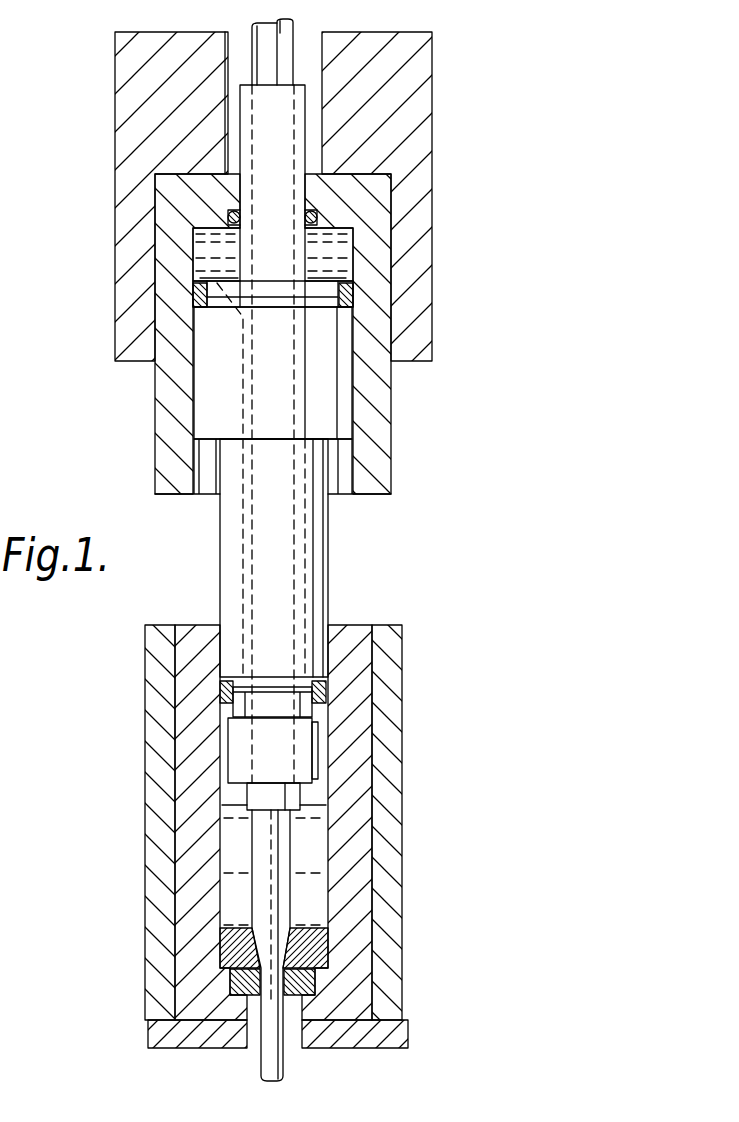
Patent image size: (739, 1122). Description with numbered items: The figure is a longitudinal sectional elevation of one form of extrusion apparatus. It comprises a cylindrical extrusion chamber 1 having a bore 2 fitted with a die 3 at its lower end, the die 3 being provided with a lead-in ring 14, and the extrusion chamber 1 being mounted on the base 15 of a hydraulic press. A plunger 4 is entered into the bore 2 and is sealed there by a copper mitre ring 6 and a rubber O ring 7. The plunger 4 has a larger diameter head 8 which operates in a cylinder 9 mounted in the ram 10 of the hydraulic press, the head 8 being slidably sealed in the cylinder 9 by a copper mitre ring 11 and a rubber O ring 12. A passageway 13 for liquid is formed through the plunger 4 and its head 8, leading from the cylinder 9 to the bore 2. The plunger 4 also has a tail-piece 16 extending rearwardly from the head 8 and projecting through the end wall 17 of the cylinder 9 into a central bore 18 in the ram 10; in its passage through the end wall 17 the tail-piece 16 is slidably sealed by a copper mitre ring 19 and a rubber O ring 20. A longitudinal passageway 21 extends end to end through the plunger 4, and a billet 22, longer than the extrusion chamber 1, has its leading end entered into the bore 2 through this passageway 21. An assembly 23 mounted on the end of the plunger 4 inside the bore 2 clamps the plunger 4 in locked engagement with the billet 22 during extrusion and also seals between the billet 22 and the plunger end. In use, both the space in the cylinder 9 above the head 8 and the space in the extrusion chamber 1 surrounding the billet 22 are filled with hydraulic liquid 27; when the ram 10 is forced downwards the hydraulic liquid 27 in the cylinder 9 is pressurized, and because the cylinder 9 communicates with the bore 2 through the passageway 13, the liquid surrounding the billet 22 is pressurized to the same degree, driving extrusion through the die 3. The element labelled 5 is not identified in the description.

The extrusion chamber 1 is at (344, 774).
The bore 2 is at (328, 825).
The die 3 is at (315, 985).
The plunger 4 is at (300, 580).
The inner bore of plunger 5 is at (305, 645).
The copper mitre ring 6 is at (320, 690).
The rubber O ring 7 is at (318, 703).
The head 8 is at (325, 380).
The cylinder 9 is at (370, 455).
The ram 10 is at (413, 140).
The copper mitre ring 11 is at (350, 307).
The rubber O ring 12 is at (348, 290).
The passageway 13 is at (245, 497).
The lead-in ring 14 is at (220, 945).
The base 15 is at (158, 1036).
The tail-piece 16 is at (270, 245).
The end wall 17 is at (203, 203).
The central bore 18 is at (233, 128).
The copper mitre ring 19 is at (313, 207).
The rubber O ring 20 is at (308, 222).
The longitudinal passageway 21 is at (307, 140).
The billet 22 is at (260, 62).
The assembly 23 is at (260, 757).
The hydraulic liquid 27 is at (205, 273).